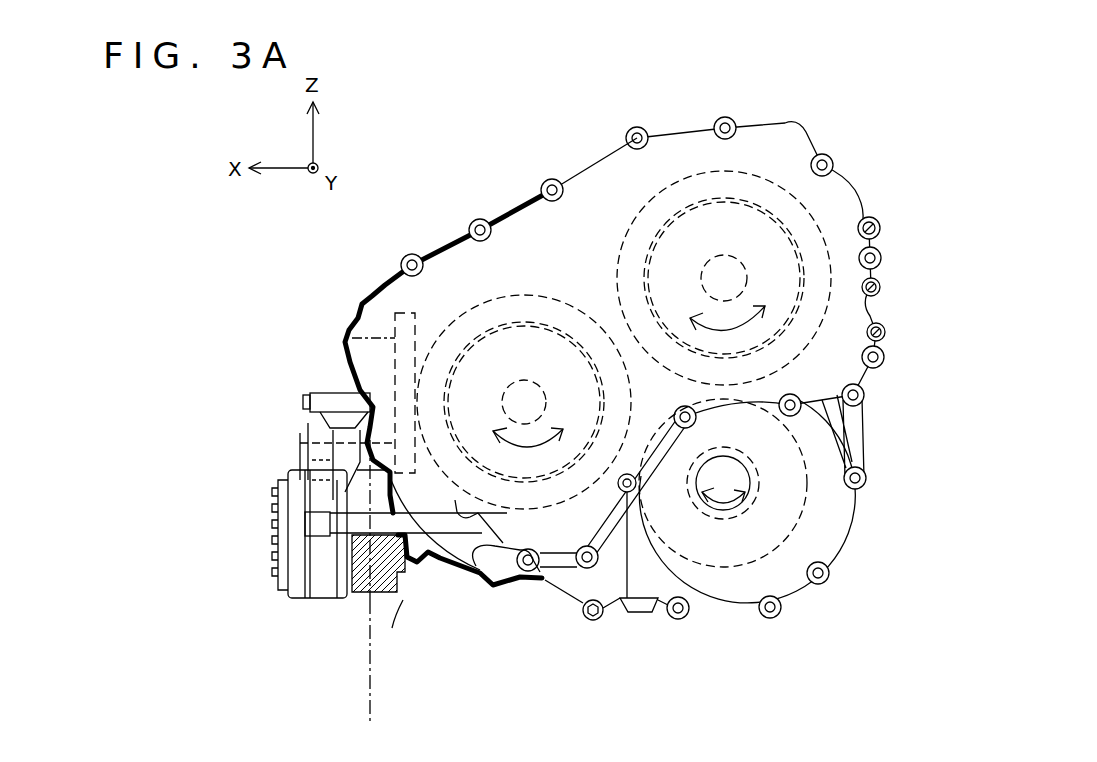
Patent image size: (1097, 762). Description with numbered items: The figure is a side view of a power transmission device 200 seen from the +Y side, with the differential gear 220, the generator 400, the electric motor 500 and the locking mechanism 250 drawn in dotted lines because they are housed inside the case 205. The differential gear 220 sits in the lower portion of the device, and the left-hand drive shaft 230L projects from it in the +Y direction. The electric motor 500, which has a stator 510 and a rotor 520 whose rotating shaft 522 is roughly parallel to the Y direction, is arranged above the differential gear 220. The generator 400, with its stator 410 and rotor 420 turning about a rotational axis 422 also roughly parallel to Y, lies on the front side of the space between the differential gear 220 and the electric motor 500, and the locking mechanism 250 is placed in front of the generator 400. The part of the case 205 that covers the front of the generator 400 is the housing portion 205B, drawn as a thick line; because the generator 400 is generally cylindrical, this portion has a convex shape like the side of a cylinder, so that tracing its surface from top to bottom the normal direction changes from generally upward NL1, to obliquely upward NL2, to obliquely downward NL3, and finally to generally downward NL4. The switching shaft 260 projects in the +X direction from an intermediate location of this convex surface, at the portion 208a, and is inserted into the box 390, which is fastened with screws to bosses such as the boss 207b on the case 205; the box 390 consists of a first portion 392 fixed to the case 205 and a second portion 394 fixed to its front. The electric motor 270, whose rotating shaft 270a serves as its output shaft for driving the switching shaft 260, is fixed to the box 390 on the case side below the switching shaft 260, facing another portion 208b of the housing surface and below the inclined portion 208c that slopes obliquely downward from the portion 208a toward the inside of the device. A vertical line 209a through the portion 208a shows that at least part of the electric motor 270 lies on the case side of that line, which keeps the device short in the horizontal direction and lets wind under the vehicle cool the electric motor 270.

The power transmission device 200 is at (684, 96).
The case 205 is at (583, 168).
The housing portion 205B is at (453, 247).
The locking mechanism 250 is at (352, 338).
The switching shaft 260 is at (382, 440).
The electric motor 270 is at (385, 597).
The rotating shaft 270a is at (345, 405).
The boss 207b is at (346, 600).
The portion where the switching shaft projects 208a is at (362, 447).
The another portion of the housing portion surface 208b is at (420, 562).
The inclined portion 208c is at (505, 562).
The vertical line 209a is at (370, 686).
The differential gear 220 is at (752, 570).
The left-hand drive shaft 230L is at (760, 487).
The box 390 is at (225, 668).
The first portion 392 is at (335, 600).
The second portion 394 is at (300, 600).
The generator 400 is at (462, 318).
The stator 410 is at (503, 314).
The rotor 420 is at (531, 357).
The rotational axis 422 is at (540, 392).
The electric motor 500 is at (637, 222).
The stator 510 is at (675, 208).
The rotor 520 is at (715, 230).
The rotating shaft 522 is at (730, 283).
The generally upward normal line NL1 is at (520, 208).
The obliquely upward normal line NL2 is at (385, 280).
The obliquely downward normal line NL3 is at (238, 517).
The generally downward normal line NL4 is at (447, 608).